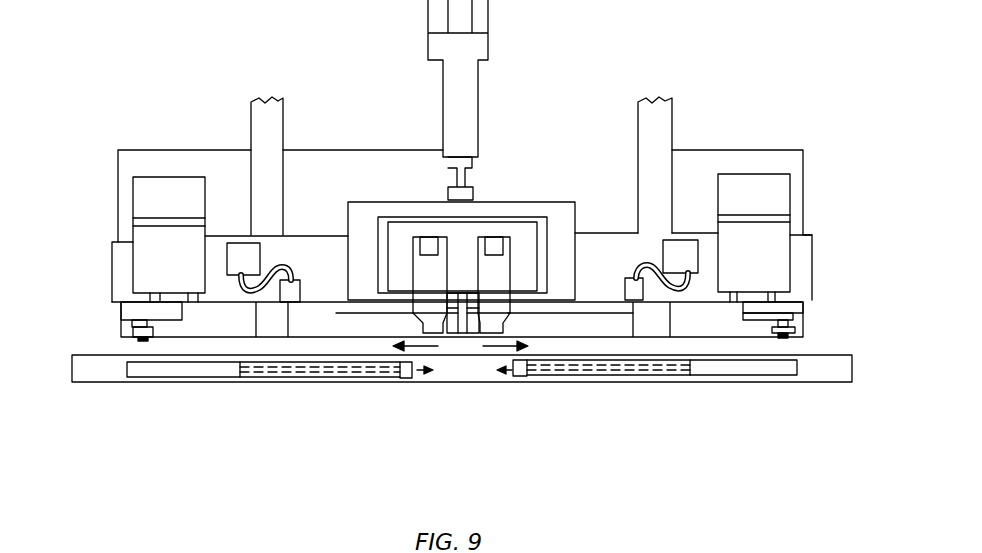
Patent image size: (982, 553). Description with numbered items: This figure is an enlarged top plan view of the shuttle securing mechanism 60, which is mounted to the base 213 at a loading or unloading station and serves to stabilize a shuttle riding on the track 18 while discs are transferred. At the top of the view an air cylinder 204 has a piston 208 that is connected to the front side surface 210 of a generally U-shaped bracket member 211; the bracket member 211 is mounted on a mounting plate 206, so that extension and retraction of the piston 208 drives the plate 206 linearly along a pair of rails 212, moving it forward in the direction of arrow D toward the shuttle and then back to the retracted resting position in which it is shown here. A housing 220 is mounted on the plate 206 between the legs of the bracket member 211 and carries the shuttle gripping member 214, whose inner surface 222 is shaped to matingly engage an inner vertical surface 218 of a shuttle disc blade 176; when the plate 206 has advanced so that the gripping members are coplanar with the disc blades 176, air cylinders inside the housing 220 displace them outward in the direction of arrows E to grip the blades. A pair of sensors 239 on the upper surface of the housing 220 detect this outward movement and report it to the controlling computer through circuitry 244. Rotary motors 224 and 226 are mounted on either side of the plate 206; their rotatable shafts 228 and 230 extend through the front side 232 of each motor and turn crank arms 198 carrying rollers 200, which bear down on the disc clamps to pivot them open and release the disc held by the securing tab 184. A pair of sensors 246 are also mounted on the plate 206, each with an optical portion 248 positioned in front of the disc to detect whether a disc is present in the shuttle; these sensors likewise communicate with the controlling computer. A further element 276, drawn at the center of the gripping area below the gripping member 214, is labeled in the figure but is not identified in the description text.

The track 18 is at (815, 375).
The shuttle securing mechanism 60 is at (756, 108).
The disc blades 176 is at (403, 367).
The securing tab 184 is at (155, 372).
The crank arms 198 is at (132, 323).
The rollers 200 is at (143, 337).
The air cylinder 204 is at (480, 25).
The mounting plate 206 is at (798, 258).
The piston 208 is at (455, 184).
The front side surface 210 is at (521, 193).
The bracket member 211 is at (543, 208).
The rails 212 is at (263, 127).
The base 213 is at (777, 160).
The gripping member 214 is at (487, 327).
The inner vertical surfaces 218 is at (433, 370).
The housing 220 is at (525, 272).
The inner surface 222 is at (416, 326).
The rotary motor 224 is at (780, 200).
The rotary motor 226 is at (142, 195).
The rotatable shaft 228 is at (753, 305).
The rotatable shaft 230 is at (160, 308).
The front side 232 is at (197, 302).
The sensors 239 is at (420, 270).
The circuitry 244 is at (427, 233).
The sensors 246 is at (237, 253).
The optical portion 248 is at (293, 280).
The blade slot 276 is at (453, 340).
The arrow D is at (432, 160).
The arrows E is at (393, 363).